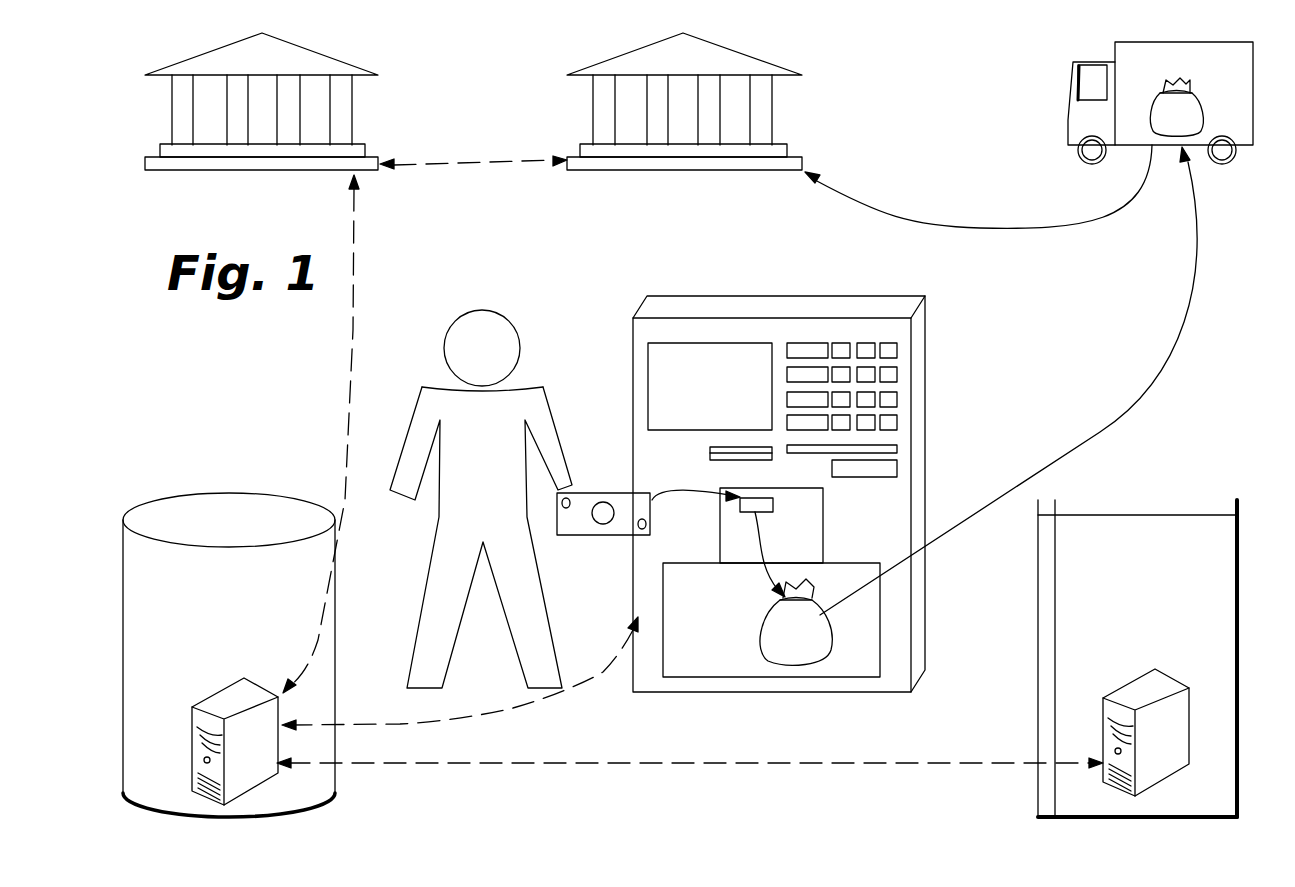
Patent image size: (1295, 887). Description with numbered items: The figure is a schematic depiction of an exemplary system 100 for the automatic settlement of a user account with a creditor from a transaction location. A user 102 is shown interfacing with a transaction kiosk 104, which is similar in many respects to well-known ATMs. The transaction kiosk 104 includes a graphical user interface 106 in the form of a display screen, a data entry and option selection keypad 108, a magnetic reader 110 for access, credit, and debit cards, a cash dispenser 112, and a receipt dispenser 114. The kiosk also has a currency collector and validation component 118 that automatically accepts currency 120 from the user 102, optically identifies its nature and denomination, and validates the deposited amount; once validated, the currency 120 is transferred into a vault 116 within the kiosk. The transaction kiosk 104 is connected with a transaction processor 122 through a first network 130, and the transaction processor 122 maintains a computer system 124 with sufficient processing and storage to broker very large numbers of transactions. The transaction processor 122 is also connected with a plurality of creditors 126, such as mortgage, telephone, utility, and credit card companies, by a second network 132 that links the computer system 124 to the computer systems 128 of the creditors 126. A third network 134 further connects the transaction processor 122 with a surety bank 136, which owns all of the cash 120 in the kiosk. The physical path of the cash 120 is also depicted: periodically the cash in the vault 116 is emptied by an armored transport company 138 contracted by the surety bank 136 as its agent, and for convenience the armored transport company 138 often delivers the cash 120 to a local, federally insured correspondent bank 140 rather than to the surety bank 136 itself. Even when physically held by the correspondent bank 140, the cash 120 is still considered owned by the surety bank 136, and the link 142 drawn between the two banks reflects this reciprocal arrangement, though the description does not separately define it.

The system 100 is at (444, 242).
The user 102 is at (480, 312).
The transaction kiosk 104 is at (847, 296).
The graphical user interface 106 is at (687, 343).
The keypad 108 is at (905, 354).
The magnetic reader 110 is at (710, 447).
The cash dispenser 112 is at (900, 447).
The receipt dispenser 114 is at (895, 468).
The vault 116 is at (880, 640).
The currency collector and validation component 118 is at (823, 523).
The currency 120 is at (1160, 95).
The transaction processor 122 is at (197, 493).
The computer system 124 is at (279, 705).
The creditors 126 is at (1075, 500).
The computer systems of the creditors 128 is at (1103, 700).
The first network 130 is at (510, 708).
The second network 132 is at (620, 763).
The third network 134 is at (353, 329).
The surety bank 136 is at (352, 88).
The armored transport company 138 is at (1068, 120).
The correspondent bank 140 is at (775, 88).
The communication link between surety bank and correspondent bank 142 is at (430, 167).